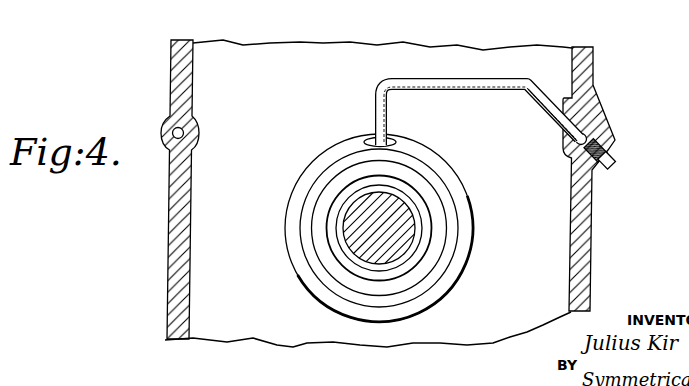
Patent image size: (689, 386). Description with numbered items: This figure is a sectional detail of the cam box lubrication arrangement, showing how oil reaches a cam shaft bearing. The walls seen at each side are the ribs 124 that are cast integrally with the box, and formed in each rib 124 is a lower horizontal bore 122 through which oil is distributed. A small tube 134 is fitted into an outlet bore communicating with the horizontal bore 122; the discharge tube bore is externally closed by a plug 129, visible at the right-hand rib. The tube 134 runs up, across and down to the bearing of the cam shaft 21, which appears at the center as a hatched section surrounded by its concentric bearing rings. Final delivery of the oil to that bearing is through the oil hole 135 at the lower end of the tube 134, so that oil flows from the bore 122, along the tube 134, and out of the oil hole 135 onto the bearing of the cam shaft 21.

The exhaust cam shaft 21 is at (403, 242).
The lower horizontal bore 122 is at (175, 129).
The rib 124 is at (193, 143).
The plug 129 is at (613, 164).
The tube 134 is at (453, 90).
The oil hole 135 is at (386, 139).